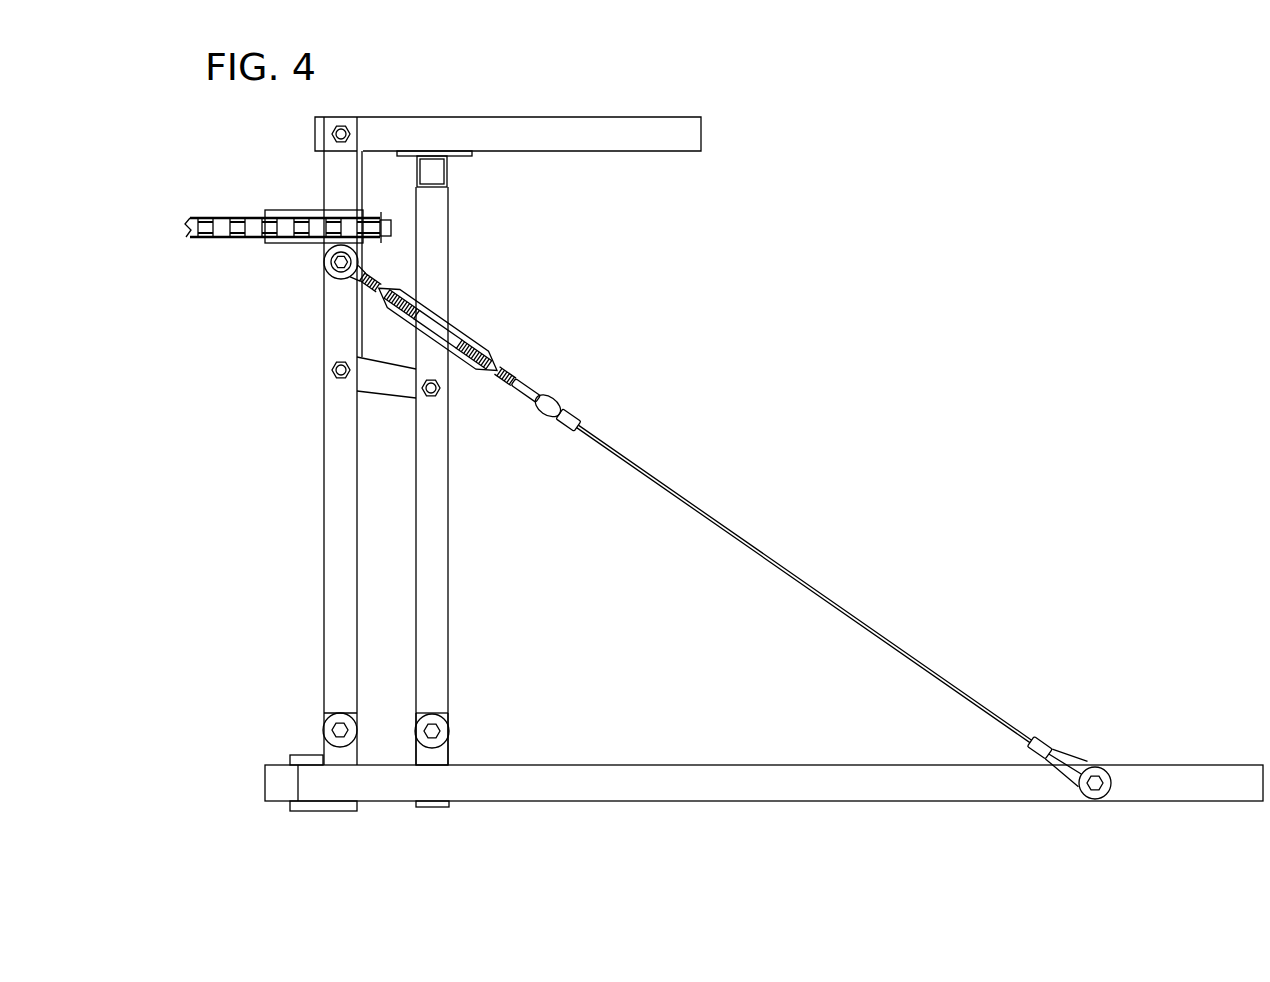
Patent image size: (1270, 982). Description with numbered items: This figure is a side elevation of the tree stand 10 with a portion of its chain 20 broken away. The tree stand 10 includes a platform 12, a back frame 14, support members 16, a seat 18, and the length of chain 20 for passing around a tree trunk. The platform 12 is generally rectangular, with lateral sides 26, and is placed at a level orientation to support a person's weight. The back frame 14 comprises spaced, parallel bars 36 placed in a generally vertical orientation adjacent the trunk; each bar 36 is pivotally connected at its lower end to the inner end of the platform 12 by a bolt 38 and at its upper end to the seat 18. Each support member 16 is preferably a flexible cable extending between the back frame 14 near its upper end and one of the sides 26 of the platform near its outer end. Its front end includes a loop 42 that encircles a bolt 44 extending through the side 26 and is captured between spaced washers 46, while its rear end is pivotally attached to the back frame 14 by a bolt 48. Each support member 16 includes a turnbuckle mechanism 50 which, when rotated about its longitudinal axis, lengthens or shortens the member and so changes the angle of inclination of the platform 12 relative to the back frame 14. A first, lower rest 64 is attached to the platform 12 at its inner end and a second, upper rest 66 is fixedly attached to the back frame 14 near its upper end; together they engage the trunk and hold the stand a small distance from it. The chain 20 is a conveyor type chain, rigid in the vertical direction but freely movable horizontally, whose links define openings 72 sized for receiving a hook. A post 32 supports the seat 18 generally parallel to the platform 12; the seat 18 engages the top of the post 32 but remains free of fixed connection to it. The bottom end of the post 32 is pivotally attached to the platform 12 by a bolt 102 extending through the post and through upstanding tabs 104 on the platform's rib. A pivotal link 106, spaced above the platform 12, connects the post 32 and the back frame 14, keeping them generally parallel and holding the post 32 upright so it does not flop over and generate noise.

The tree stand 10 is at (880, 296).
The platform 12 is at (749, 760).
The back frame 14 is at (321, 560).
The support member 16 is at (760, 543).
The seat 18 is at (584, 114).
The chain 20 is at (236, 212).
The lateral side 26 is at (858, 802).
The post 32 is at (448, 540).
The bar 36 is at (324, 427).
The bolt 38 is at (332, 728).
The loop 42 is at (1060, 768).
The bolt 44 is at (1095, 788).
The washer 46 is at (1113, 782).
The bolt 48 is at (341, 272).
The turnbuckle mechanism 50 is at (458, 318).
The first rest 64 is at (275, 760).
The second rest 66 is at (300, 212).
The opening 72 is at (290, 232).
The bolt 102 is at (437, 728).
The upstanding tab 104 is at (450, 752).
The pivotal link 106 is at (387, 398).